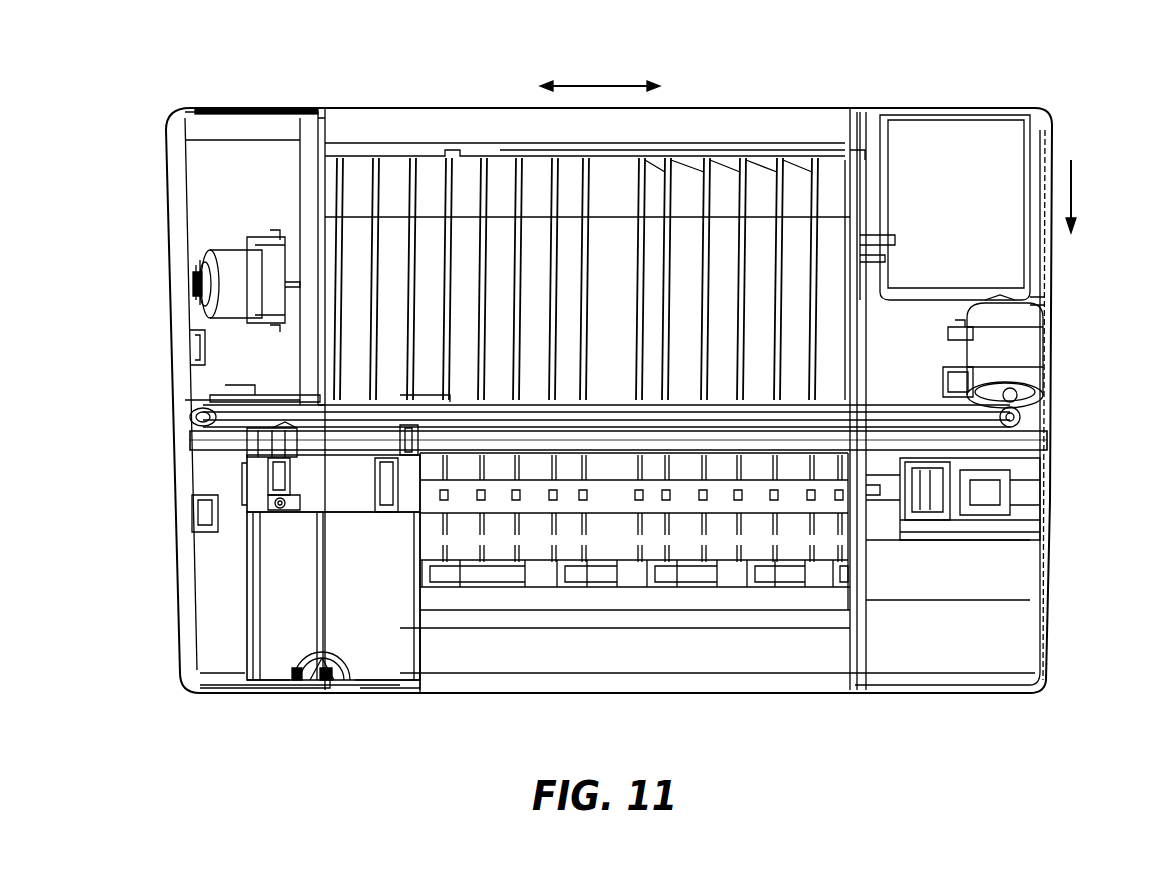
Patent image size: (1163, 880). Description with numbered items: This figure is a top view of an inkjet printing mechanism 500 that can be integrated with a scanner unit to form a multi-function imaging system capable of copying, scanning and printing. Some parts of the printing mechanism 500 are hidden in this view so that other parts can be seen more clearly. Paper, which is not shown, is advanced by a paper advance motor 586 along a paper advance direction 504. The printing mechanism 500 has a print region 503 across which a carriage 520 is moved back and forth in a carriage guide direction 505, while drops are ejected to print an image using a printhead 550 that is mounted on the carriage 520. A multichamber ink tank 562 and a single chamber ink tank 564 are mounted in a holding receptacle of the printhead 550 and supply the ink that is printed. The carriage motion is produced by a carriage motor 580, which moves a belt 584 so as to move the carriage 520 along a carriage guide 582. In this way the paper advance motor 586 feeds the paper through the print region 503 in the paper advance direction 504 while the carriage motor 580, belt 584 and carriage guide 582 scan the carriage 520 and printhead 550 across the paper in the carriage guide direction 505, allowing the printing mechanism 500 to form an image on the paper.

The inkjet printing mechanism 500 is at (166, 62).
The print region 503 is at (606, 503).
The paper advance direction 504 is at (1072, 192).
The carriage guide direction 505 is at (606, 86).
The carriage 520 is at (245, 443).
The printhead 550 is at (245, 475).
The multichamber ink tank 562 is at (413, 648).
The single chamber ink tank 564 is at (265, 548).
The carriage motor 580 is at (1028, 318).
The carriage guide 582 is at (1040, 443).
The belt 584 is at (913, 422).
The paper advance motor 586 is at (225, 255).